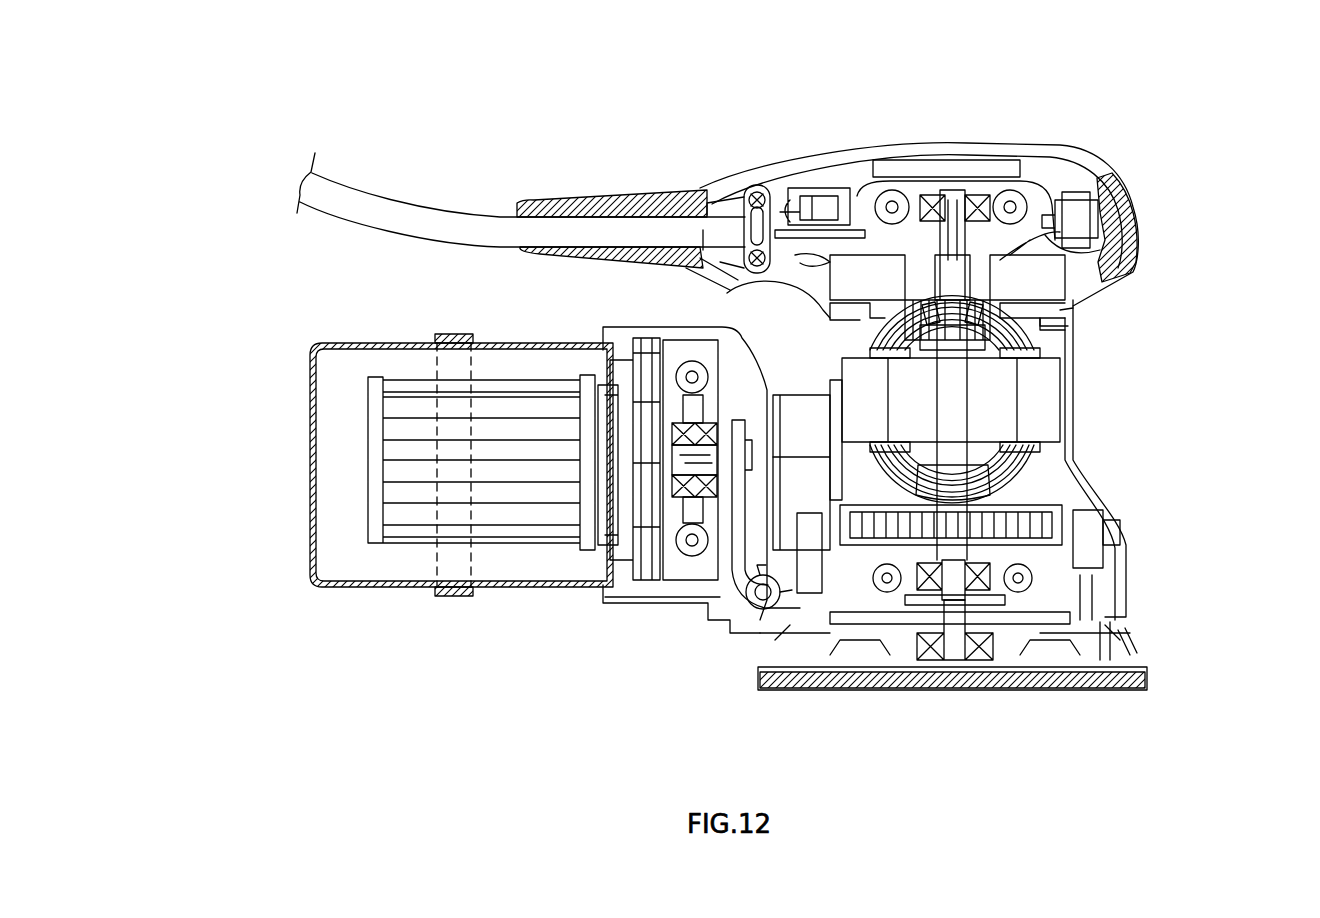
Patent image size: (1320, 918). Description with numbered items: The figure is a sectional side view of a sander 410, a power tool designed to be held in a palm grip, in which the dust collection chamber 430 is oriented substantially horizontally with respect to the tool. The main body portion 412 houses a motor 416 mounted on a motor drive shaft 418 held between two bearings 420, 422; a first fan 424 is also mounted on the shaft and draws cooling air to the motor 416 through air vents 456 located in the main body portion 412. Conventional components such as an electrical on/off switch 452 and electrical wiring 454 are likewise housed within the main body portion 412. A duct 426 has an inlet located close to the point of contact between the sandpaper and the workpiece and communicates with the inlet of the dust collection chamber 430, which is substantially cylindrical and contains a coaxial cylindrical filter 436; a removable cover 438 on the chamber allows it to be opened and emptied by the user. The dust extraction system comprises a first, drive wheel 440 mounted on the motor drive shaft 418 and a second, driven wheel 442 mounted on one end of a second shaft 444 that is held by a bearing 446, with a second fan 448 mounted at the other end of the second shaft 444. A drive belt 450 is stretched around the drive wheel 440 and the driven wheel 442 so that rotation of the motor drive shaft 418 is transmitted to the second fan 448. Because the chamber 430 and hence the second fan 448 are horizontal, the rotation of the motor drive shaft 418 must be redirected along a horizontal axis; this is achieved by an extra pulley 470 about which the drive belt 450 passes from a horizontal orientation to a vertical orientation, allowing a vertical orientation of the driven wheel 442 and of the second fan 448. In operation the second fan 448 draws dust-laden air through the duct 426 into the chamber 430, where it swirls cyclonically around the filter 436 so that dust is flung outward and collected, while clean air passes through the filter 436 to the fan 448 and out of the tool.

The sander 410 is at (1192, 168).
The main body portion 412 is at (1095, 485).
The motor 416 is at (1035, 392).
The motor drive shaft 418 is at (948, 205).
The bearing 420 is at (1000, 584).
The bearing 422 is at (975, 205).
The first fan 424 is at (1020, 517).
The duct 426 is at (800, 483).
The dust collection chamber 430 is at (520, 340).
The filter 436 is at (403, 405).
The removable cover 438 is at (333, 425).
The first, drive wheel 440 is at (997, 617).
The second, driven wheel 442 is at (738, 477).
The second shaft 444 is at (682, 460).
The bearing 446 is at (675, 437).
The second fan 448 is at (652, 370).
The drive belt 450 is at (738, 590).
The electrical on/off switch 452 is at (1078, 213).
The electrical wiring 454 is at (870, 190).
The air vents 456 is at (1078, 320).
The extra pulley 470 is at (775, 598).